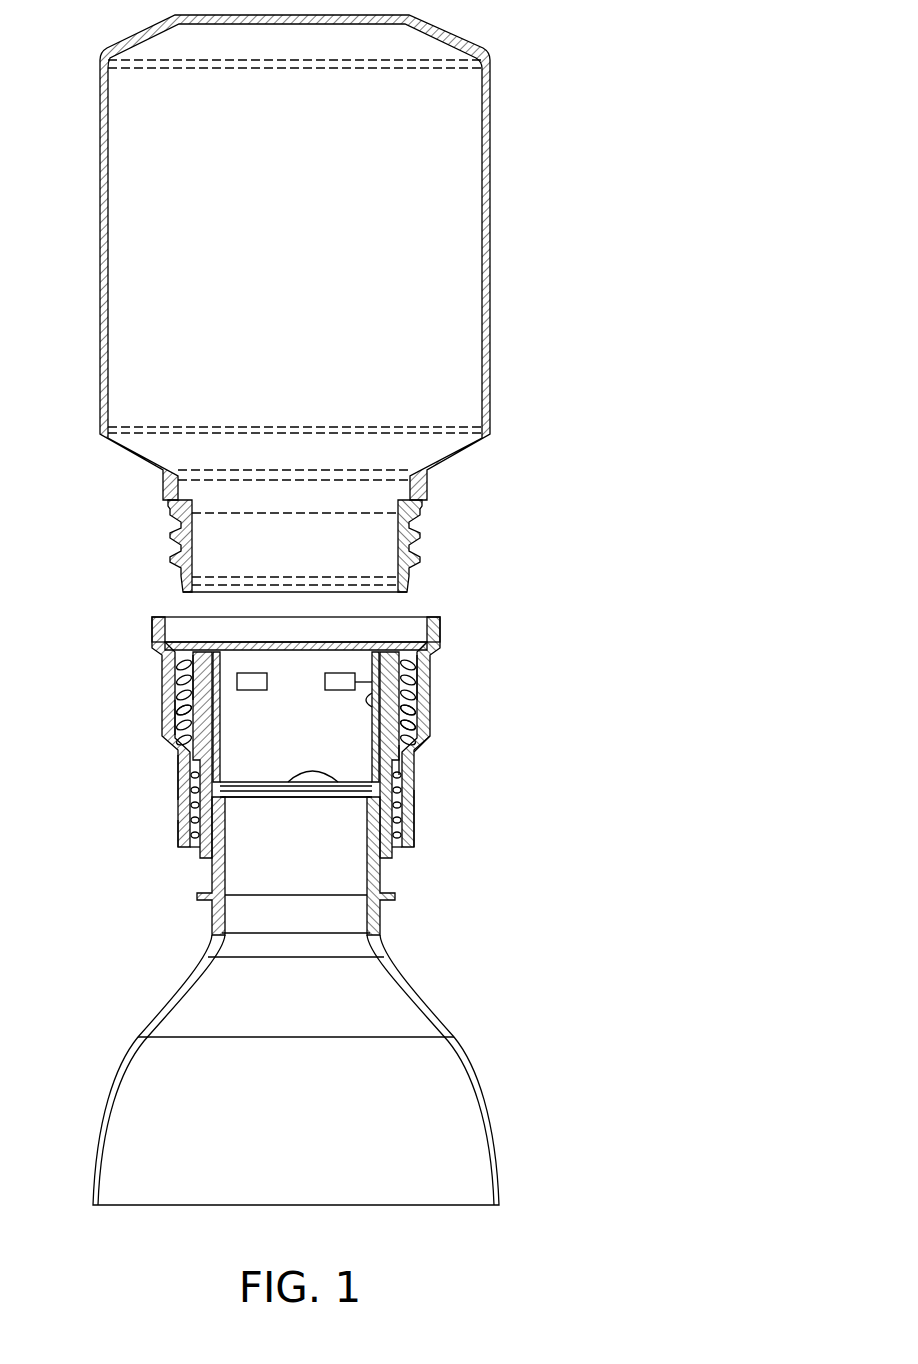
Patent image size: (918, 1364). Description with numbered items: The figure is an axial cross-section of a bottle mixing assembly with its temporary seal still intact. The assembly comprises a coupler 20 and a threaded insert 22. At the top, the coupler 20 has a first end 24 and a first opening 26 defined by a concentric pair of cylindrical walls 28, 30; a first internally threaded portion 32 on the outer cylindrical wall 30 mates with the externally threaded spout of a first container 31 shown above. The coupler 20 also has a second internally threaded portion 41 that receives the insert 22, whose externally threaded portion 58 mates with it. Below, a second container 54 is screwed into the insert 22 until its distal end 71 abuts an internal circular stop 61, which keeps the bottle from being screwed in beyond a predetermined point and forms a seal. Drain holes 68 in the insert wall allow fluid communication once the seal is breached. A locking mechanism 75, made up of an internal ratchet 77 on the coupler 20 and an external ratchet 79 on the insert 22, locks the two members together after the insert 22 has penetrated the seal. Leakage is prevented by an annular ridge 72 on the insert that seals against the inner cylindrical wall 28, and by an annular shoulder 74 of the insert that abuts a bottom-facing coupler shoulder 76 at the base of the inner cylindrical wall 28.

The first container 31 is at (530, 238).
The first opening 26 is at (173, 604).
The first end 24 is at (413, 617).
The coupler 20 is at (324, 740).
The inner cylindrical wall 28 is at (197, 680).
The outer cylindrical wall 30 is at (185, 708).
The first internally threaded portion 32 is at (172, 717).
The coupler shoulder 76 is at (180, 767).
The internal circular stop 61 is at (182, 830).
The threaded insert 22 is at (192, 868).
The drain holes 68 is at (425, 667).
The internal ratchet 77 is at (400, 712).
The external ratchet 79 is at (398, 733).
The locking mechanism 75 is at (500, 702).
The annular ridge 72 is at (415, 740).
The second internally threaded portion 41 is at (392, 758).
The annular shoulder 74 is at (378, 783).
The externally threaded portion 58 is at (405, 807).
The distal end 71 is at (343, 798).
The second container 54 is at (330, 1001).